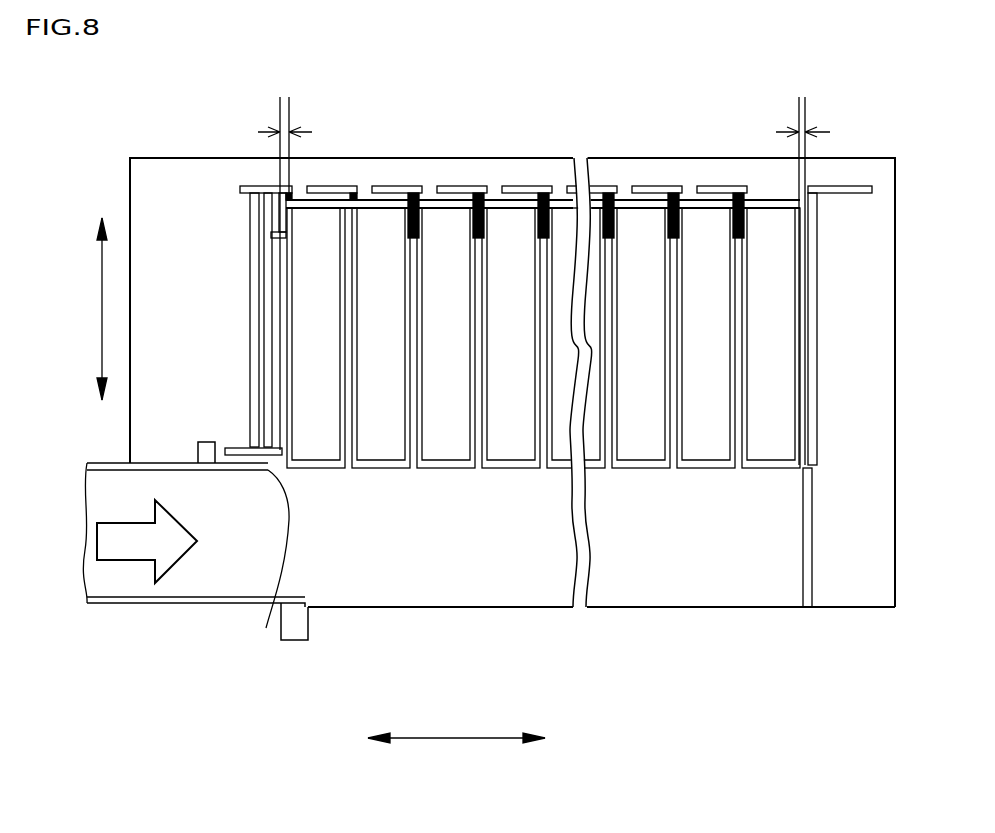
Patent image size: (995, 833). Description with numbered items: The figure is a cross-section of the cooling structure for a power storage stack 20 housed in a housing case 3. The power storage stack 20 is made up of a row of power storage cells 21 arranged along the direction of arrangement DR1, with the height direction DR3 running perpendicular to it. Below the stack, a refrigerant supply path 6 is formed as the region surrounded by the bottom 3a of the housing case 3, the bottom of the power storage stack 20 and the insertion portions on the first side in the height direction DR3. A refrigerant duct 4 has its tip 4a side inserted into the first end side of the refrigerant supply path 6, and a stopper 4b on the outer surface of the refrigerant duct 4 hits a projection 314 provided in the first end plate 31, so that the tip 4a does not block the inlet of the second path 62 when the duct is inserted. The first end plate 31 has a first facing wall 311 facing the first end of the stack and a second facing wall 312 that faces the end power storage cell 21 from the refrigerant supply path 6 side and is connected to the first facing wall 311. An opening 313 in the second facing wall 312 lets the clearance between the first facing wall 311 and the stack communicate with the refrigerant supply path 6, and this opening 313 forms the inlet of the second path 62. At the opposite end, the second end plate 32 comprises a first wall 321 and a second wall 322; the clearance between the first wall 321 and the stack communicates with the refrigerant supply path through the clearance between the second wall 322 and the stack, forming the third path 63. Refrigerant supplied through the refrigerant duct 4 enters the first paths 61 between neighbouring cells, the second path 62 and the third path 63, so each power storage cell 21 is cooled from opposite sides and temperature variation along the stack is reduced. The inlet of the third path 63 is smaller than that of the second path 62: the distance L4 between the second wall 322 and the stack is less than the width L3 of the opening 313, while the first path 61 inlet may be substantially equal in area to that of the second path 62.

The housing case 3 is at (176, 157).
The bottom of housing case 3a is at (479, 608).
The refrigerant duct 4 is at (208, 604).
The tip of refrigerant duct 4a is at (281, 627).
The stopper 4b is at (206, 441).
The refrigerant supply path 6 is at (442, 583).
The power storage stack 20 is at (543, 279).
The power storage cell 21 is at (315, 217).
The first end plate 31 is at (304, 382).
The first facing wall 311 is at (266, 306).
The second facing wall 312 is at (327, 468).
The opening 313 is at (298, 470).
The projection 314 is at (226, 447).
The second end plate 32 is at (843, 360).
The first wall 321 is at (818, 296).
The second wall 322 is at (812, 526).
The first path 61 is at (347, 300).
The second path 62 is at (272, 280).
The third path 63 is at (808, 292).
The width of opening L3 is at (285, 260).
The distance between second wall and stack L4 is at (803, 267).
The direction of arrangement DR1 is at (456, 760).
The height direction DR3 is at (102, 306).